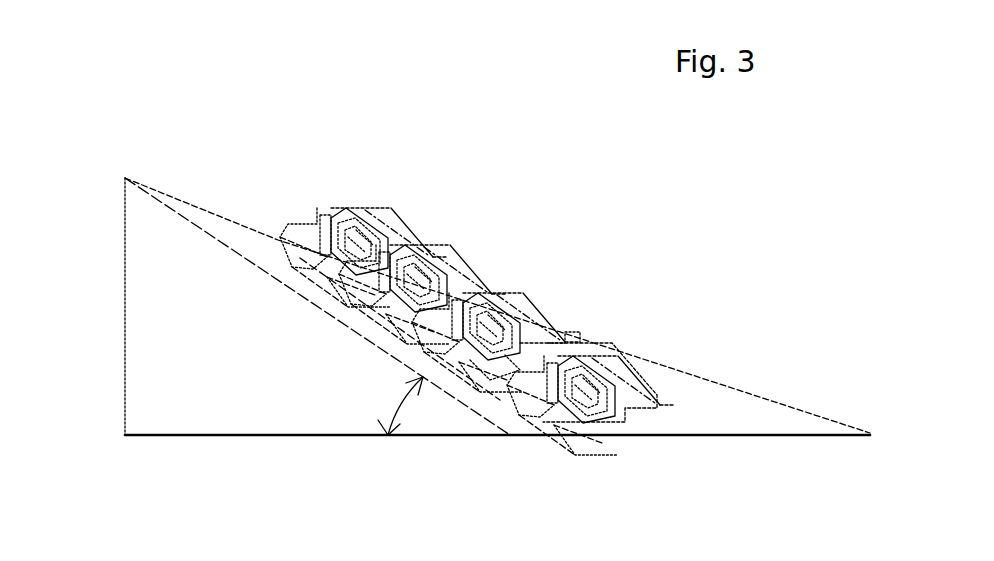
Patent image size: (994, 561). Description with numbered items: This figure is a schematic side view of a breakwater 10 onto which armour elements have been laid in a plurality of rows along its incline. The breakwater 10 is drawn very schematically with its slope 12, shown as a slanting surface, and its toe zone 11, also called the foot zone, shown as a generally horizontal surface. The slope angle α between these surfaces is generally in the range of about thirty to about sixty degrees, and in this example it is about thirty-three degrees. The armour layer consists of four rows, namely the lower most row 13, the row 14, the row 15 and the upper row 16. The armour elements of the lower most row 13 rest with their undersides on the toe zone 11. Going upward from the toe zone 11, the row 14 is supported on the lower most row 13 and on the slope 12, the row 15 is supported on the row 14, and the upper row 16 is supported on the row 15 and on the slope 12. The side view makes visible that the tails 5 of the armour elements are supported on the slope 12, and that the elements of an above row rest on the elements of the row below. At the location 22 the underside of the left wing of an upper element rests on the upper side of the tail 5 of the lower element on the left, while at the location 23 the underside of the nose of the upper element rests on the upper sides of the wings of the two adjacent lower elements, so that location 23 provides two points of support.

The tail 5 is at (415, 342).
The breakwater 10 is at (228, 150).
The toe zone 11 is at (748, 415).
The slope 12 is at (191, 208).
The lower most row 13 is at (605, 330).
The row of armour elements 14 is at (535, 285).
The row of armour elements 15 is at (455, 245).
The upper row 16 is at (392, 210).
The location of support 22 is at (505, 362).
The location of support 23 is at (560, 328).